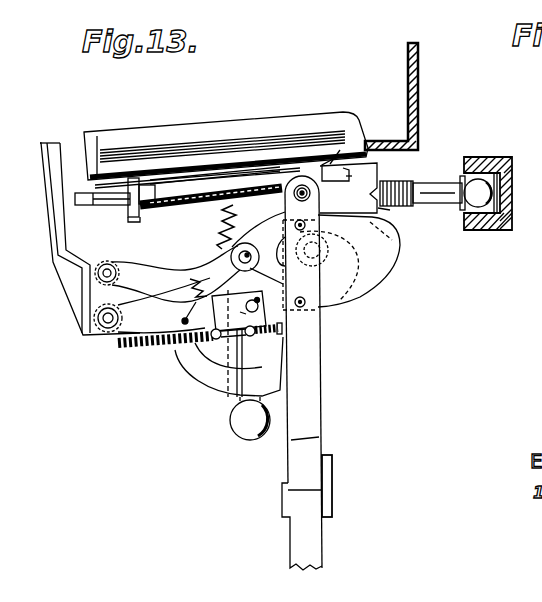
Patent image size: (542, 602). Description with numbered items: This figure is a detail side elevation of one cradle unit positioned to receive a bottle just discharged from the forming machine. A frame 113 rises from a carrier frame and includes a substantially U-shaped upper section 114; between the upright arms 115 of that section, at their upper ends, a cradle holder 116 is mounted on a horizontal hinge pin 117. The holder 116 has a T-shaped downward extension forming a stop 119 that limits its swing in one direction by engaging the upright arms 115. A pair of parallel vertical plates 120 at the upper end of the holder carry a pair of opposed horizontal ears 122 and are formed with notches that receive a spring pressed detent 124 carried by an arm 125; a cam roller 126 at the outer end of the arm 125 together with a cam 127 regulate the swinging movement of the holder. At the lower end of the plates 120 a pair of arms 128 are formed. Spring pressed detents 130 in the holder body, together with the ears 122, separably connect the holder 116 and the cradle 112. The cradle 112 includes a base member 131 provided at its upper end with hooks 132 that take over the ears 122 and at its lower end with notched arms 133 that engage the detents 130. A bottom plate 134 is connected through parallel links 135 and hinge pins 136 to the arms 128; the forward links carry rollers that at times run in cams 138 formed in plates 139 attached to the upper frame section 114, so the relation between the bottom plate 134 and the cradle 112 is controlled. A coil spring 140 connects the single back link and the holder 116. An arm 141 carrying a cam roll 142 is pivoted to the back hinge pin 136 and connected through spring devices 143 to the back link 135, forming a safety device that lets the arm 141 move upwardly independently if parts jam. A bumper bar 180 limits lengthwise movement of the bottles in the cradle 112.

The cradle 112 is at (306, 104).
The frame 113 is at (338, 511).
The upper section 114 is at (326, 410).
The upright arms 115 is at (314, 438).
The cradle holder 116 is at (160, 188).
The hinge pin 117 is at (302, 191).
The stop 119 is at (101, 214).
The vertical plates 120 is at (370, 178).
The ears 122 is at (337, 165).
The spring pressed detent 124 is at (380, 210).
The arm 125 is at (446, 178).
The cam roller 126 is at (503, 175).
The cam 127 is at (502, 157).
The arms 128 is at (264, 262).
The spring pressed detents 130 is at (148, 210).
The base member 131 is at (267, 159).
The hooks 132 is at (346, 176).
The notched arms 133 is at (130, 209).
The bottom plate 134 is at (50, 222).
The links 135 is at (137, 313).
The hinge pins 136 is at (262, 274).
The cams 138 is at (401, 252).
The plates 139 is at (360, 289).
The coil spring 140 is at (216, 248).
The arm 141 is at (263, 352).
The cam roll 142 is at (238, 420).
The spring devices 143 is at (157, 352).
The bumper bar 180 is at (417, 84).